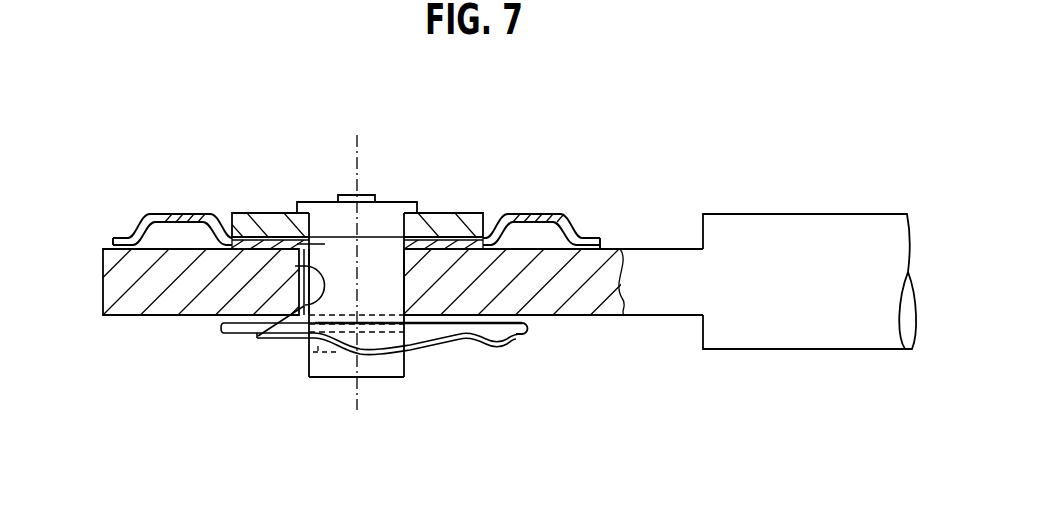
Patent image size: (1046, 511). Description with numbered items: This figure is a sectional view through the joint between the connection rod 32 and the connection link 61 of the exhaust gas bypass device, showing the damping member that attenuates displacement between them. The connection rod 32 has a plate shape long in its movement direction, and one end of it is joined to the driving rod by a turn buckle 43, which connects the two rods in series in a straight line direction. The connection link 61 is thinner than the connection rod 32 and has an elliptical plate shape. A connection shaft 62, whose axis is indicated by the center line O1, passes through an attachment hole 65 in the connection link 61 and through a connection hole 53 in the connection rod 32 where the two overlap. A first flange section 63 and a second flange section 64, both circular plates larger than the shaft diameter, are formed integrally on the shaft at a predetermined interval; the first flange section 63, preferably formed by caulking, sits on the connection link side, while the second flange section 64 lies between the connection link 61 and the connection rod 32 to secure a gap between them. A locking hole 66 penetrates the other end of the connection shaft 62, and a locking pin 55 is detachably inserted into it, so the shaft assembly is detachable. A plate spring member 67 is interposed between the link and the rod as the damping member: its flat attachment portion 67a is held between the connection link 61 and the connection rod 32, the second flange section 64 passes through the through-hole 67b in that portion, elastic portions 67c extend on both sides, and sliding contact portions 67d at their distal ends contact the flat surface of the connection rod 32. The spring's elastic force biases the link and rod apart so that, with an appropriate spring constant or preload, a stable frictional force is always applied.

The connection rod 32 is at (660, 249).
The turn buckle 43 is at (805, 335).
The connection hole 53 is at (258, 336).
The locking pin 55 is at (519, 345).
The connection link 61 is at (250, 213).
The connection shaft 62 is at (408, 362).
The first flange section 63 is at (405, 213).
The second flange section 64 is at (430, 237).
The attachment hole 65 is at (322, 213).
The locking hole 66 is at (305, 347).
The plate spring member 67 is at (548, 213).
The attachment portion 67a is at (275, 237).
The through-hole 67b is at (320, 238).
The elastic portions 67c is at (183, 214).
The sliding contact portions 67d is at (113, 238).
The screw axis O1 is at (354, 257).